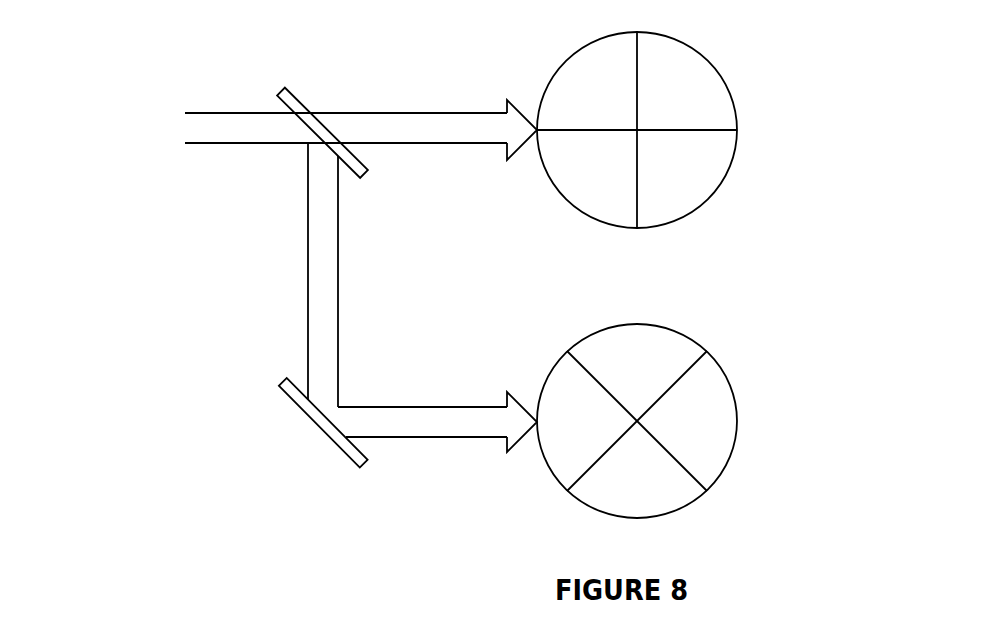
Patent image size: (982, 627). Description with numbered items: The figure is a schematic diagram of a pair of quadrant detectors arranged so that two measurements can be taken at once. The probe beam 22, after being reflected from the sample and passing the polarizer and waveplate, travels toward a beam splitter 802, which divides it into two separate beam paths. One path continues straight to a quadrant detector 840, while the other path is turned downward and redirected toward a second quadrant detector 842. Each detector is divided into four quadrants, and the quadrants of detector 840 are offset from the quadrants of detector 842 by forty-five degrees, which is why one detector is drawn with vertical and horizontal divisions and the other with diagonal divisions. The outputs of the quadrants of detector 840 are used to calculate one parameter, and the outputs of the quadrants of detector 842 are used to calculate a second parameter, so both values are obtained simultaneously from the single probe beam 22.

The probe beam 22 is at (232, 113).
The beam splitter 802 is at (294, 97).
The quadrant detector 840 is at (733, 102).
The quadrant detector 842 is at (733, 388).